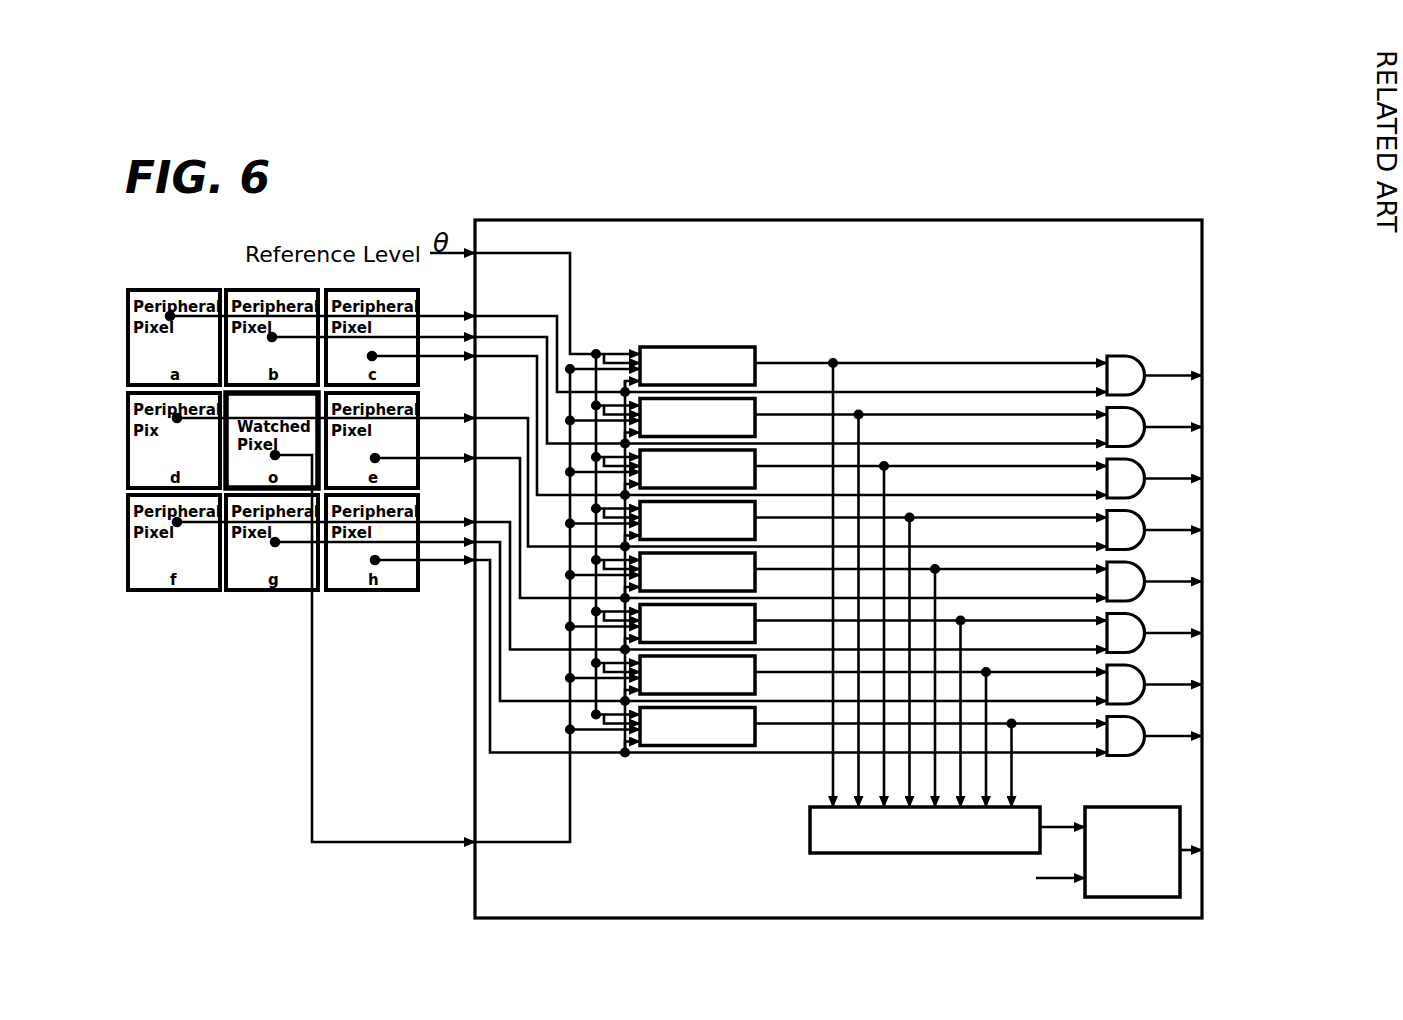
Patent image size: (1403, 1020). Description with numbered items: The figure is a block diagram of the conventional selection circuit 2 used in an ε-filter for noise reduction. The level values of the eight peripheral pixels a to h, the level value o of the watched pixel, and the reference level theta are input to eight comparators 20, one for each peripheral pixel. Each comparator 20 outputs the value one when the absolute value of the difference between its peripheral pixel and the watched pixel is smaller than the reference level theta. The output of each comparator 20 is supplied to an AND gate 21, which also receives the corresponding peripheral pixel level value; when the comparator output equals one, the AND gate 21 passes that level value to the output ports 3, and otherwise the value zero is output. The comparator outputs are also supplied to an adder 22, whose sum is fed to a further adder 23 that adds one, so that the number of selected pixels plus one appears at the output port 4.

The selection circuit 2 is at (1128, 220).
The output ports 3 is at (1250, 346).
The output port 4 is at (1261, 833).
The comparators 20 is at (700, 345).
The AND gate 21 is at (1123, 355).
The adder 22 is at (921, 857).
The adder 23 is at (1135, 806).